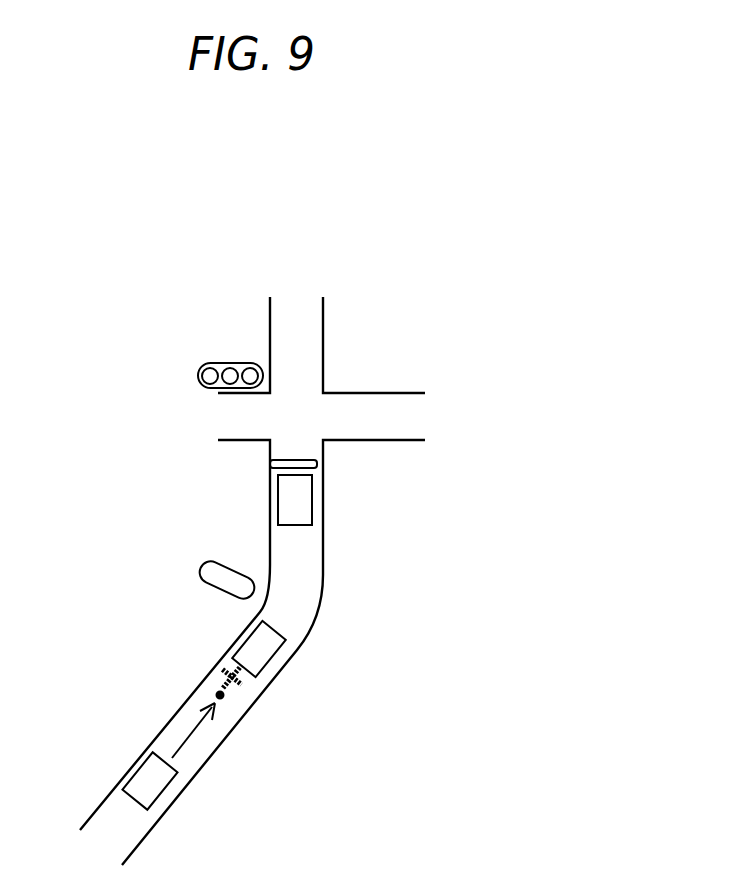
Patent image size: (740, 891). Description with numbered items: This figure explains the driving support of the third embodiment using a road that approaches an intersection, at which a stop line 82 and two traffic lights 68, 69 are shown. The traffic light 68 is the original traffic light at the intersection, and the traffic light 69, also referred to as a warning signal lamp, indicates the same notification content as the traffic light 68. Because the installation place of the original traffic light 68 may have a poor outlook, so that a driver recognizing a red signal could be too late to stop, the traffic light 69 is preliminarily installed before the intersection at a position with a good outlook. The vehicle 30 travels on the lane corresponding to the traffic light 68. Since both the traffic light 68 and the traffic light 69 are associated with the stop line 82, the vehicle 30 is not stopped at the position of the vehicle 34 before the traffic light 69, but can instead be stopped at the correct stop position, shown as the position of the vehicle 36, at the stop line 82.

The vehicle 30 is at (155, 787).
The vehicle 34 is at (263, 655).
The vehicle 36 is at (302, 502).
The traffic light 68 is at (222, 362).
The traffic light 69 is at (217, 560).
The stop line 82 is at (273, 472).